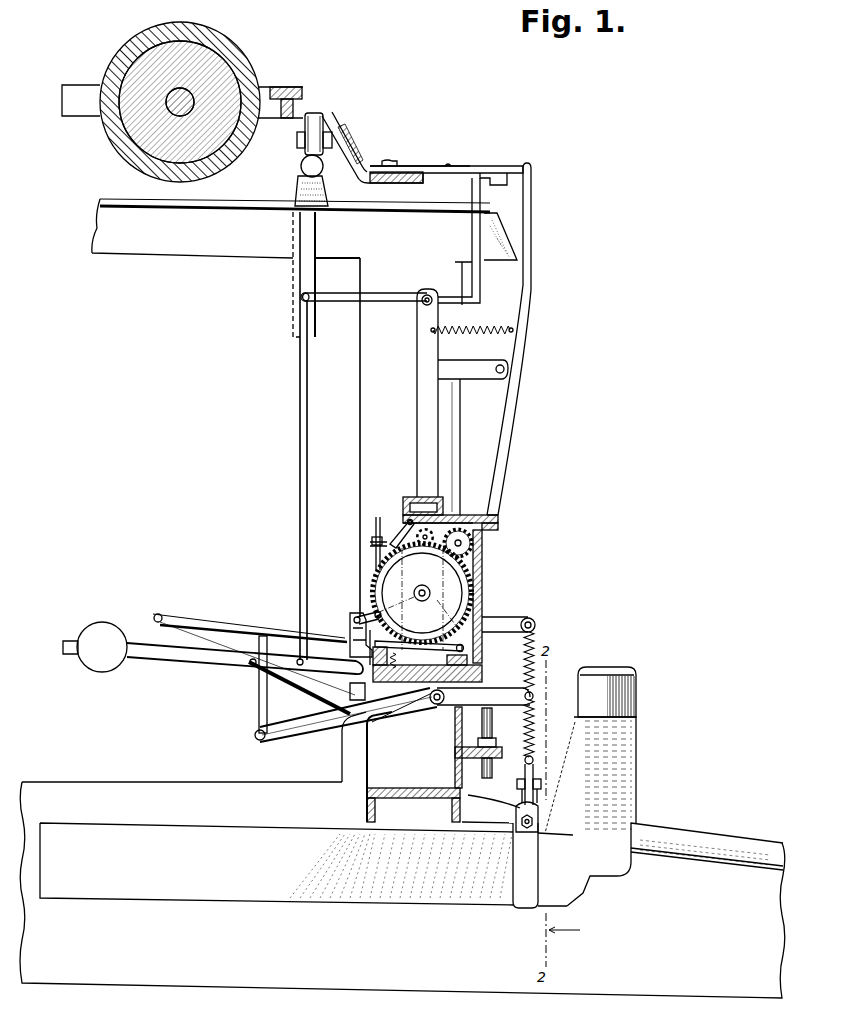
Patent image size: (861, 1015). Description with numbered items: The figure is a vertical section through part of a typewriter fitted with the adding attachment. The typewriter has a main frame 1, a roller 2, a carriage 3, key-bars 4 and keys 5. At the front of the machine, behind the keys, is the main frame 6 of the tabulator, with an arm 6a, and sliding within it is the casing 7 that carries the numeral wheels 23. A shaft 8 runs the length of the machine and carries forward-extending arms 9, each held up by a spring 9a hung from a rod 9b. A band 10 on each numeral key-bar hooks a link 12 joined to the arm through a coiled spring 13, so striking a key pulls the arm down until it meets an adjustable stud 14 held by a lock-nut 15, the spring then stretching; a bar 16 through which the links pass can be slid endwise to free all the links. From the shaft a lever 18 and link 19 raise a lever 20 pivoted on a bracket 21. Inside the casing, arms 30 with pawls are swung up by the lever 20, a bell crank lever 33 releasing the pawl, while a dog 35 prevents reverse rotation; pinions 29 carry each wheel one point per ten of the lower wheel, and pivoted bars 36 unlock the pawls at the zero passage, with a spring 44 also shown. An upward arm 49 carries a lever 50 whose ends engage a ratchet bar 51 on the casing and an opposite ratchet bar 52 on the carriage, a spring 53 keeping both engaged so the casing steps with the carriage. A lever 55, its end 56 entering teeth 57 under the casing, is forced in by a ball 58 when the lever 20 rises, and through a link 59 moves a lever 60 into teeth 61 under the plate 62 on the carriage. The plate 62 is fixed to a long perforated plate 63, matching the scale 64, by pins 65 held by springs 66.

The main frame 1 is at (360, 419).
The roller 2 is at (243, 58).
The carriage 3 is at (320, 115).
The key-bars 4 is at (300, 900).
The keys 5 is at (637, 700).
The main frame of tabulator 6 is at (403, 499).
The frame arm 6a is at (428, 712).
The frame or casing 7 is at (485, 556).
The shaft 8 is at (434, 705).
The arms 9 is at (502, 693).
The spring 9a is at (536, 648).
The rod 9b is at (532, 620).
The band 10 is at (518, 873).
The link 12 is at (535, 768).
The coiled spring 13 is at (536, 735).
The stud 14 is at (492, 720).
The lock-nut 15 is at (497, 748).
The bar 16 is at (543, 787).
The lever 18 is at (310, 738).
The link 19 is at (259, 706).
The lever 20 is at (240, 625).
The bracket 21 is at (306, 706).
The numeral wheels 23 is at (472, 583).
The pinions 29 is at (478, 540).
The arms 30 is at (358, 614).
The bell crank lever 33 is at (346, 627).
The dog 35 is at (402, 522).
The bars 36 is at (370, 528).
The spring 44 is at (400, 663).
The upwardly-extending arm 49 is at (416, 388).
The lever 50 is at (505, 393).
The ratchet bar 51 is at (500, 515).
The ratchet bar 52 is at (533, 168).
The spring 53 is at (481, 330).
The lever 55 is at (205, 662).
The end of lever 56 is at (358, 689).
The teeth 57 is at (419, 640).
The ball 58 is at (104, 672).
The link 59 is at (314, 436).
The lever 60 is at (388, 304).
The teeth 61 is at (503, 212).
The plate 62 is at (476, 166).
The plate 63 is at (388, 181).
The scale 64 is at (392, 126).
The pins 65 is at (393, 161).
The springs 66 is at (427, 166).